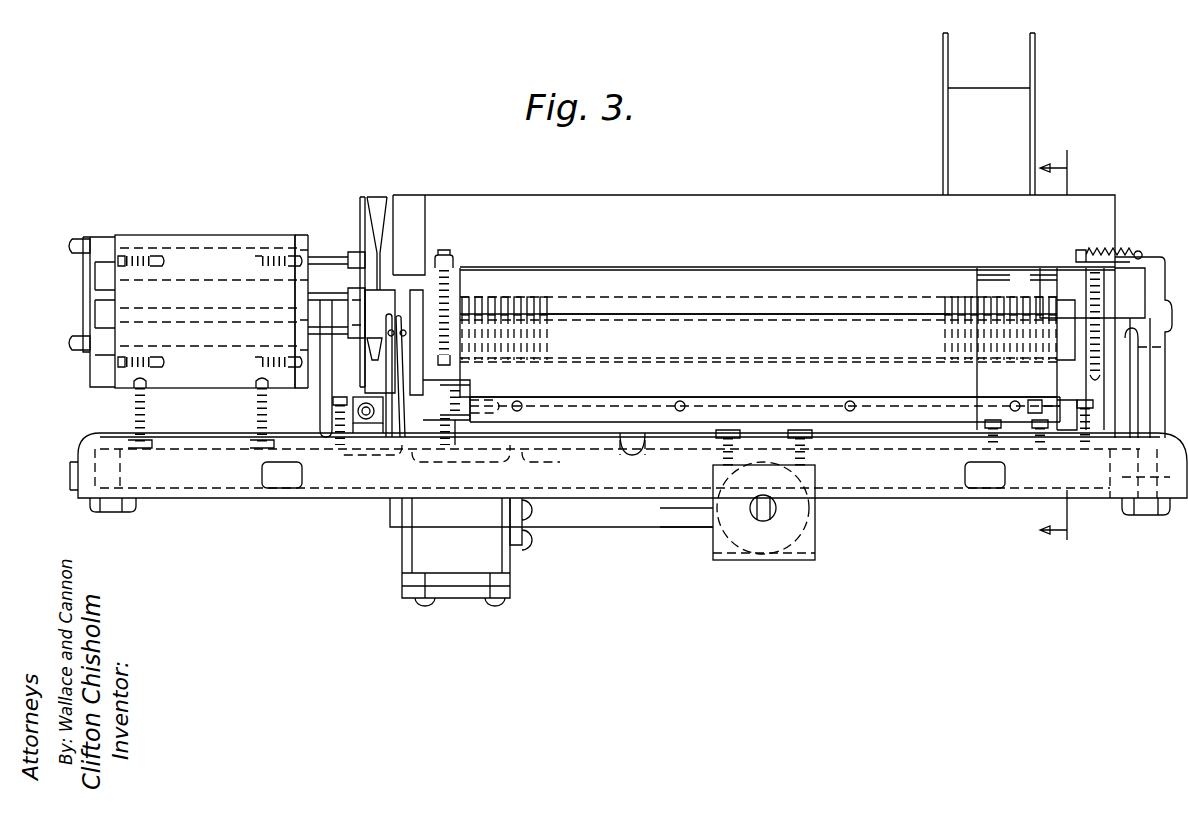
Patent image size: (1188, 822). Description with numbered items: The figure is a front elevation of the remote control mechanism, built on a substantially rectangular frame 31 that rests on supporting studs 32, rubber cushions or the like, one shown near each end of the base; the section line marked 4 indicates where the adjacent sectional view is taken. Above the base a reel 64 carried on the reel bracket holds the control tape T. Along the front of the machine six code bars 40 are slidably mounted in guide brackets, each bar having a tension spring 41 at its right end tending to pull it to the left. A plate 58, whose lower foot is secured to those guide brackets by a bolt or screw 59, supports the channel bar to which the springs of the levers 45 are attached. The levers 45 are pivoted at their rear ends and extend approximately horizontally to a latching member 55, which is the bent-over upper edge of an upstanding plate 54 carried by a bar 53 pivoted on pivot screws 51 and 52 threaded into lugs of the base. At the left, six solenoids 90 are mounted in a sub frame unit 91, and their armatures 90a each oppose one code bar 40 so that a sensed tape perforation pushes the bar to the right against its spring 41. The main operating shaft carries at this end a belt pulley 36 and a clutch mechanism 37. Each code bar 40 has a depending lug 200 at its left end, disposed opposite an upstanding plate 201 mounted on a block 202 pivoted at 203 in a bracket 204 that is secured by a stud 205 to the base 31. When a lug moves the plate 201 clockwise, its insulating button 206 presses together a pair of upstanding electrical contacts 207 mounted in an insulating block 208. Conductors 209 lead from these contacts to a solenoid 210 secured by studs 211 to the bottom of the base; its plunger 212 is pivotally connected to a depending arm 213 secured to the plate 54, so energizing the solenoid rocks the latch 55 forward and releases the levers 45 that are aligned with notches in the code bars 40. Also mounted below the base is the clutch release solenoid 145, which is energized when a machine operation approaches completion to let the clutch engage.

The frame 31 is at (983, 498).
The supporting studs 32 is at (135, 510).
The section line 4- 4 is at (1068, 345).
The reel 64 is at (1038, 72).
The plate 58 is at (790, 196).
The tension spring 41 is at (1122, 255).
The bolt or screw 59 is at (448, 262).
The code bars 40 is at (868, 295).
The upstanding plate 54 is at (815, 348).
The latching member 55 is at (757, 314).
The parallel bars or levers 45 is at (545, 297).
The bar 53 is at (765, 410).
The pivot screw 51 is at (500, 398).
The pivot screw 52 is at (1030, 399).
The studs 211 is at (728, 430).
The solenoid 210 is at (770, 560).
The depending arm 213 is at (790, 480).
The plunger 212 is at (778, 512).
The conductors 209 is at (392, 508).
The clutch release solenoid 145 is at (403, 543).
The bracket 204 is at (344, 448).
The pivot 203 is at (368, 420).
The block 202 is at (356, 395).
The stud 205 is at (356, 400).
The depending lug 200 is at (364, 340).
The upstanding plate 201 is at (370, 362).
The button 206 is at (392, 325).
The electrical contacts 207 is at (410, 325).
The block 208 is at (410, 405).
The clutch mechanism 37 is at (405, 196).
The belt pulley 36 is at (360, 200).
The solenoid 90 is at (197, 253).
The sub frame unit 91 is at (262, 237).
The solenoid armatures 90a is at (332, 320).